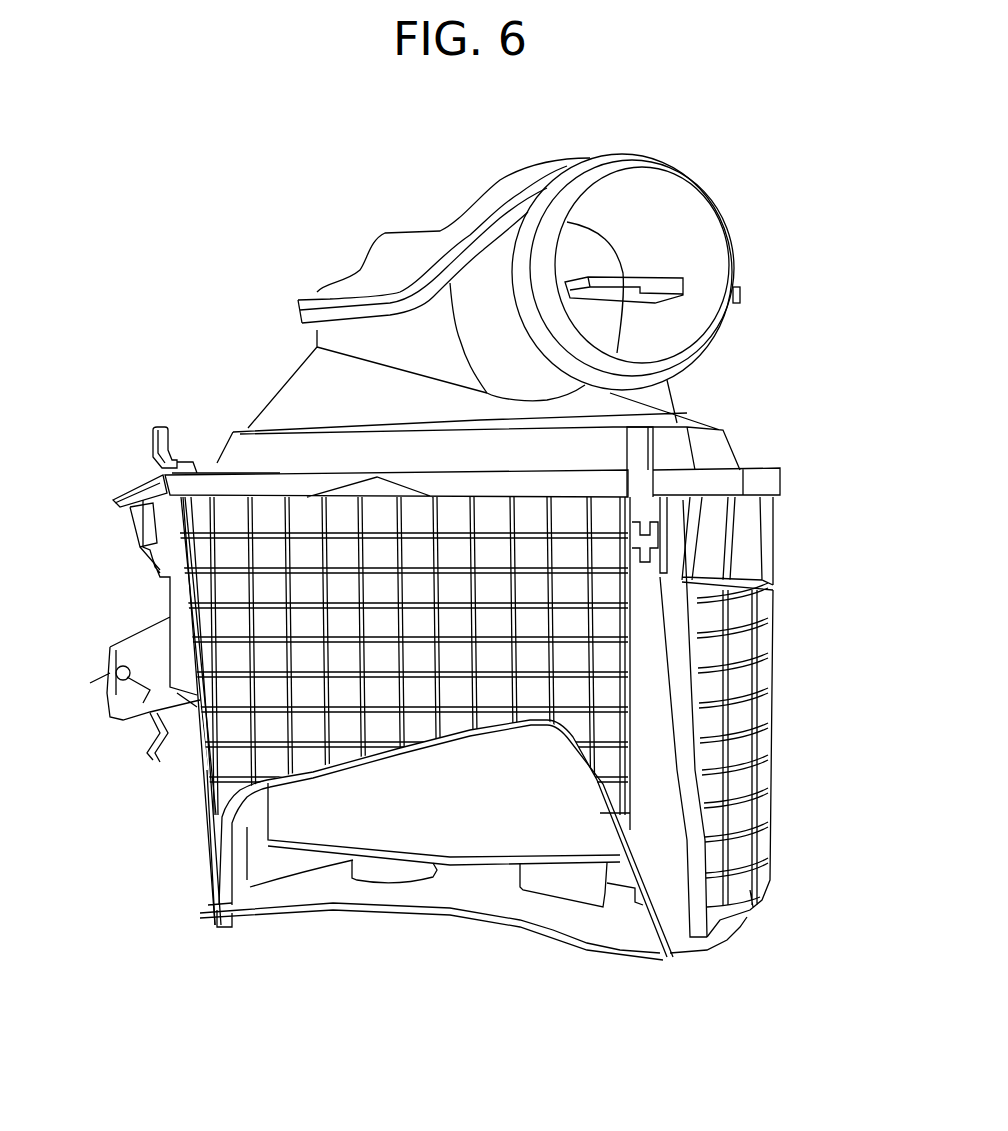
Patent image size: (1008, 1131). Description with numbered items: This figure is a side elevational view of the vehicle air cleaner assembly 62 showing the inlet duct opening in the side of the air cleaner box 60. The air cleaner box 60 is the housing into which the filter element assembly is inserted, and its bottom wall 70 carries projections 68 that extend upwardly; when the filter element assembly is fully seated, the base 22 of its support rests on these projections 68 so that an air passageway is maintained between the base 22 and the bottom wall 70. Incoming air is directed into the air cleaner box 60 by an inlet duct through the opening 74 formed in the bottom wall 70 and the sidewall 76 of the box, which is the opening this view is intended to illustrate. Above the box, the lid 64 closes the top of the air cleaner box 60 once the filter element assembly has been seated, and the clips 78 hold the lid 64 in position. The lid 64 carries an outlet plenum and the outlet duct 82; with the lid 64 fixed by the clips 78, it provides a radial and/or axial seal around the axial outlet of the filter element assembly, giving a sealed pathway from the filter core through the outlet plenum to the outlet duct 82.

The base 22 is at (470, 862).
The air cleaner box 60 is at (772, 670).
The air cleaner assembly 62 is at (807, 218).
The lid 64 is at (190, 467).
The projections 68 is at (373, 868).
The bottom wall 70 is at (597, 928).
The opening 74 is at (240, 903).
The sidewall 76 is at (612, 765).
The clips 78 is at (642, 475).
The outlet duct 82 is at (660, 186).